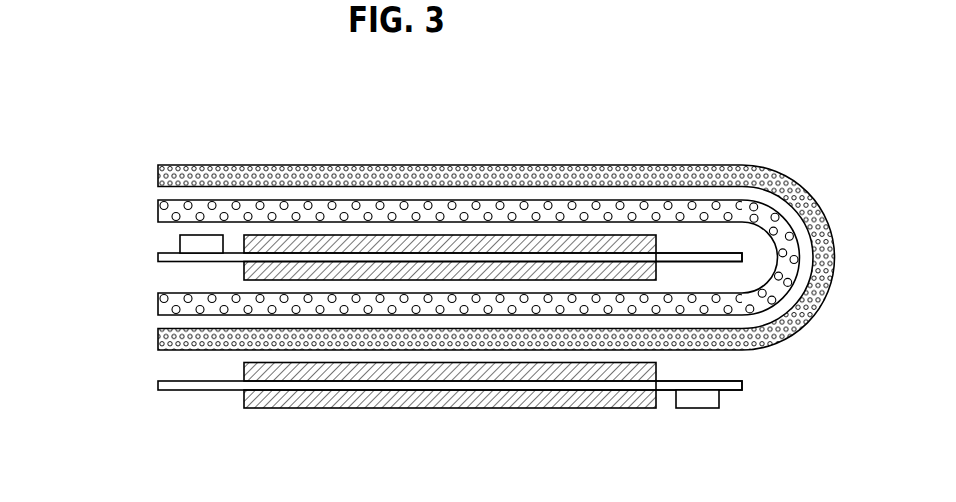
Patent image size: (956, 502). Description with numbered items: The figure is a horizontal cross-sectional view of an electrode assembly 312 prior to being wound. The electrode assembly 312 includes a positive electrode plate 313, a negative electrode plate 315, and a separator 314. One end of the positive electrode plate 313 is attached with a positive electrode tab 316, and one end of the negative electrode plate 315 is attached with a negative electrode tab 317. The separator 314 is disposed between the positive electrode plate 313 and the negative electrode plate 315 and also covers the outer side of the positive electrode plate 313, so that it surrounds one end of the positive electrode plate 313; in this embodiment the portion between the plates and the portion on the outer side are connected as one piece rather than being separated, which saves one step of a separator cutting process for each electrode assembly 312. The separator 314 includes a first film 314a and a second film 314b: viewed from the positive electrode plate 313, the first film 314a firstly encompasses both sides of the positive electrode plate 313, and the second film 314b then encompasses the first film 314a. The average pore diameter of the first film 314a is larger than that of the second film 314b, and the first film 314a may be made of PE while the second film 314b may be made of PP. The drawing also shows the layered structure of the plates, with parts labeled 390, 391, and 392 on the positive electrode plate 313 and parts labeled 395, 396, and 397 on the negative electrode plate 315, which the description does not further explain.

The electrode assembly 312 is at (804, 97).
The positive electrode plate 313 is at (156, 254).
The separator 314 is at (75, 170).
The first film 314a is at (158, 210).
The second film 314b is at (158, 176).
The negative electrode plate 315 is at (157, 382).
The positive electrode tab 316 is at (203, 240).
The negative electrode tab 317 is at (703, 406).
The first current collector 390 is at (343, 258).
The first active material layer 391 is at (518, 245).
The first uncoated portion 392 is at (708, 257).
The second current collector 395 is at (415, 387).
The second active material layer 396 is at (510, 402).
The second uncoated portion 397 is at (723, 382).